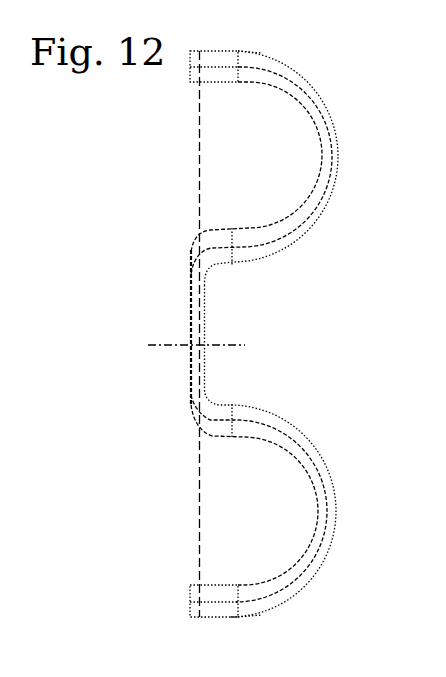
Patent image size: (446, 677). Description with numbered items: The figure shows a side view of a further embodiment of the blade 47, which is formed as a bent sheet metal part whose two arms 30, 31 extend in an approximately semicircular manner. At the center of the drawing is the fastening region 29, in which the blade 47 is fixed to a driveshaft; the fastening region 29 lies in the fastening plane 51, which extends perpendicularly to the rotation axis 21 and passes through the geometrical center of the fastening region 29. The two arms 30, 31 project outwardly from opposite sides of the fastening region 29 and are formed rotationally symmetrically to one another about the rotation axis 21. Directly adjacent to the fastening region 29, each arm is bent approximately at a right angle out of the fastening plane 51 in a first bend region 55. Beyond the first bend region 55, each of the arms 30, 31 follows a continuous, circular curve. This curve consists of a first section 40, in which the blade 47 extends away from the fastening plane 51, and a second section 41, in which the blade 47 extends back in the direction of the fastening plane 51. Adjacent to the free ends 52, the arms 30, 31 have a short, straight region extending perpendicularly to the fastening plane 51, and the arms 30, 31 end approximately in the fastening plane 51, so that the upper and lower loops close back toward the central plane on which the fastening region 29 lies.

The rotation axis 21 is at (157, 345).
The fastening region 29 is at (192, 382).
The arm 30 is at (343, 440).
The arm 31 is at (287, 157).
The first section 40 is at (297, 235).
The second section 41 is at (262, 62).
The blade 47 is at (330, 70).
The fastening plane 51 is at (159, 334).
The free end 52 is at (191, 68).
The first bend region 55 is at (194, 258).